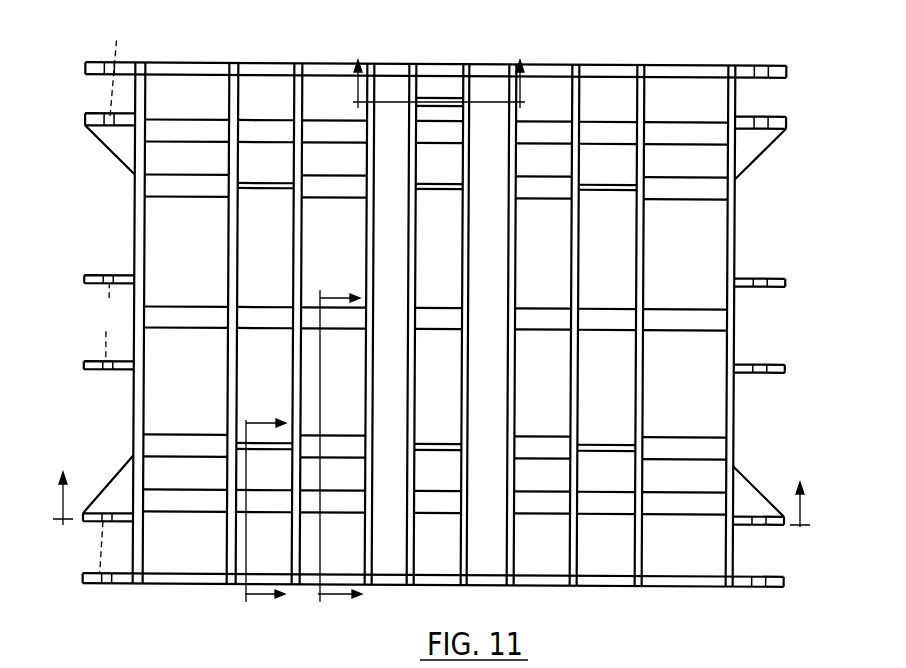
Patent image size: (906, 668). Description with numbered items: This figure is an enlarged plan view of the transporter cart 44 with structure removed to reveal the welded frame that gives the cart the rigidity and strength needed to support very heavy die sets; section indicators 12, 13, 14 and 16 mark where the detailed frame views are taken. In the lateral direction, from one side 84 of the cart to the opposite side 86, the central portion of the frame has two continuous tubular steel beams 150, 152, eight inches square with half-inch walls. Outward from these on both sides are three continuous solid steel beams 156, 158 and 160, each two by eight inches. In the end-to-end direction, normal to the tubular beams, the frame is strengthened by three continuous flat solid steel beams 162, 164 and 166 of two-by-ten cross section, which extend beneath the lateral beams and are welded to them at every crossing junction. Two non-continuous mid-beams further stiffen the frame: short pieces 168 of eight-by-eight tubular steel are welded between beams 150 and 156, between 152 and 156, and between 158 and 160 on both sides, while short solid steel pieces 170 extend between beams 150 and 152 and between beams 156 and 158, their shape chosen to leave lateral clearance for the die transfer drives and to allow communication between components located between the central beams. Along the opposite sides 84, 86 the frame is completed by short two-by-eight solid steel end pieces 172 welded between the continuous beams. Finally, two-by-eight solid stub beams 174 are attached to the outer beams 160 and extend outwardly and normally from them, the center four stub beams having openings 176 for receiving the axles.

The section line 12 is at (439, 499).
The section line 13 is at (341, 447).
The section line 14 is at (267, 512).
The section line 16 is at (445, 66).
The cart 44 is at (673, 66).
The side of the cart 84 is at (616, 585).
The opposite side of the cart 86 is at (548, 64).
The tubular steel beam 150 is at (466, 283).
The tubular steel beam 152 is at (397, 370).
The solid steel beam 156 is at (297, 374).
The solid steel beam 158 is at (232, 374).
The outer solid steel beam 160 is at (140, 392).
The end-to-end solid steel beam 162 is at (195, 507).
The end-to-end solid steel beam 164 is at (186, 308).
The end-to-end solid steel beam 166 is at (186, 122).
The short tubular mid-beam piece 168 is at (300, 177).
The short solid mid-beam piece 170 is at (266, 190).
The short end piece 172 is at (300, 60).
The stub beam 174 is at (84, 72).
The opening 176 is at (115, 42).